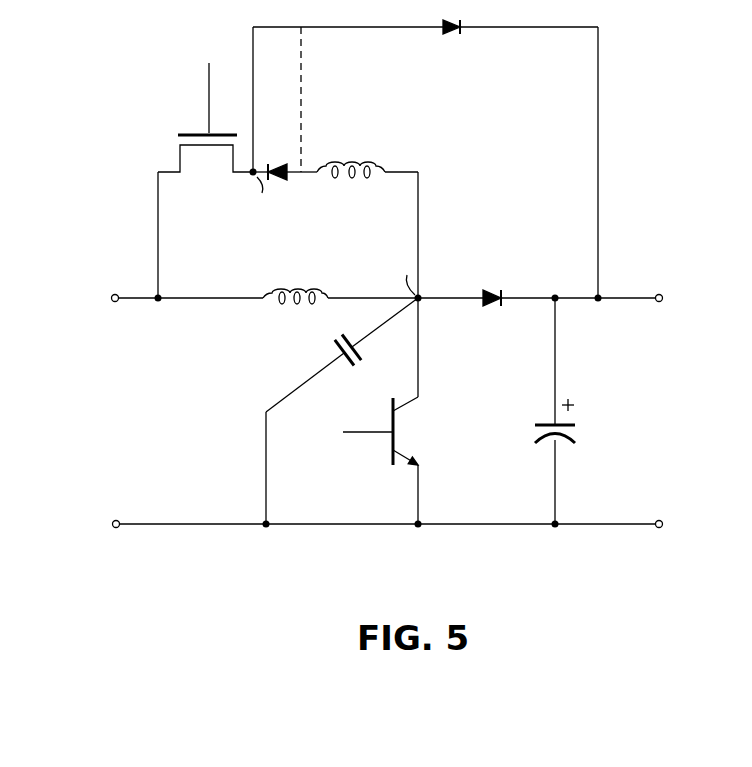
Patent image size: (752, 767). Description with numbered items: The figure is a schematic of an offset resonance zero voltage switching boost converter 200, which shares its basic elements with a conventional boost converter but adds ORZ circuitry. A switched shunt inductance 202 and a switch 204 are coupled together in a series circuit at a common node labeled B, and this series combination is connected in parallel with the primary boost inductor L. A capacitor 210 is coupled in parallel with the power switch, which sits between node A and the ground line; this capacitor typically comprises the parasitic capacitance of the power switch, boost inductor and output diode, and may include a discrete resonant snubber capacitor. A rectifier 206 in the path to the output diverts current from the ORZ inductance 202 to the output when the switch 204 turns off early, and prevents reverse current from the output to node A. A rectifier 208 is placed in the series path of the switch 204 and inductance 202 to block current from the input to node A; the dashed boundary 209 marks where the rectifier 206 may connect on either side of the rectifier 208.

The offset resonance zero voltage switching boost converter 200 is at (391, 304).
The switched shunt inductance 202 is at (357, 163).
The switch 204 is at (192, 132).
The rectifier 206 is at (448, 32).
The rectifier 208 is at (282, 159).
The dashed boundary line 209 is at (302, 80).
The capacitor 210 is at (332, 343).